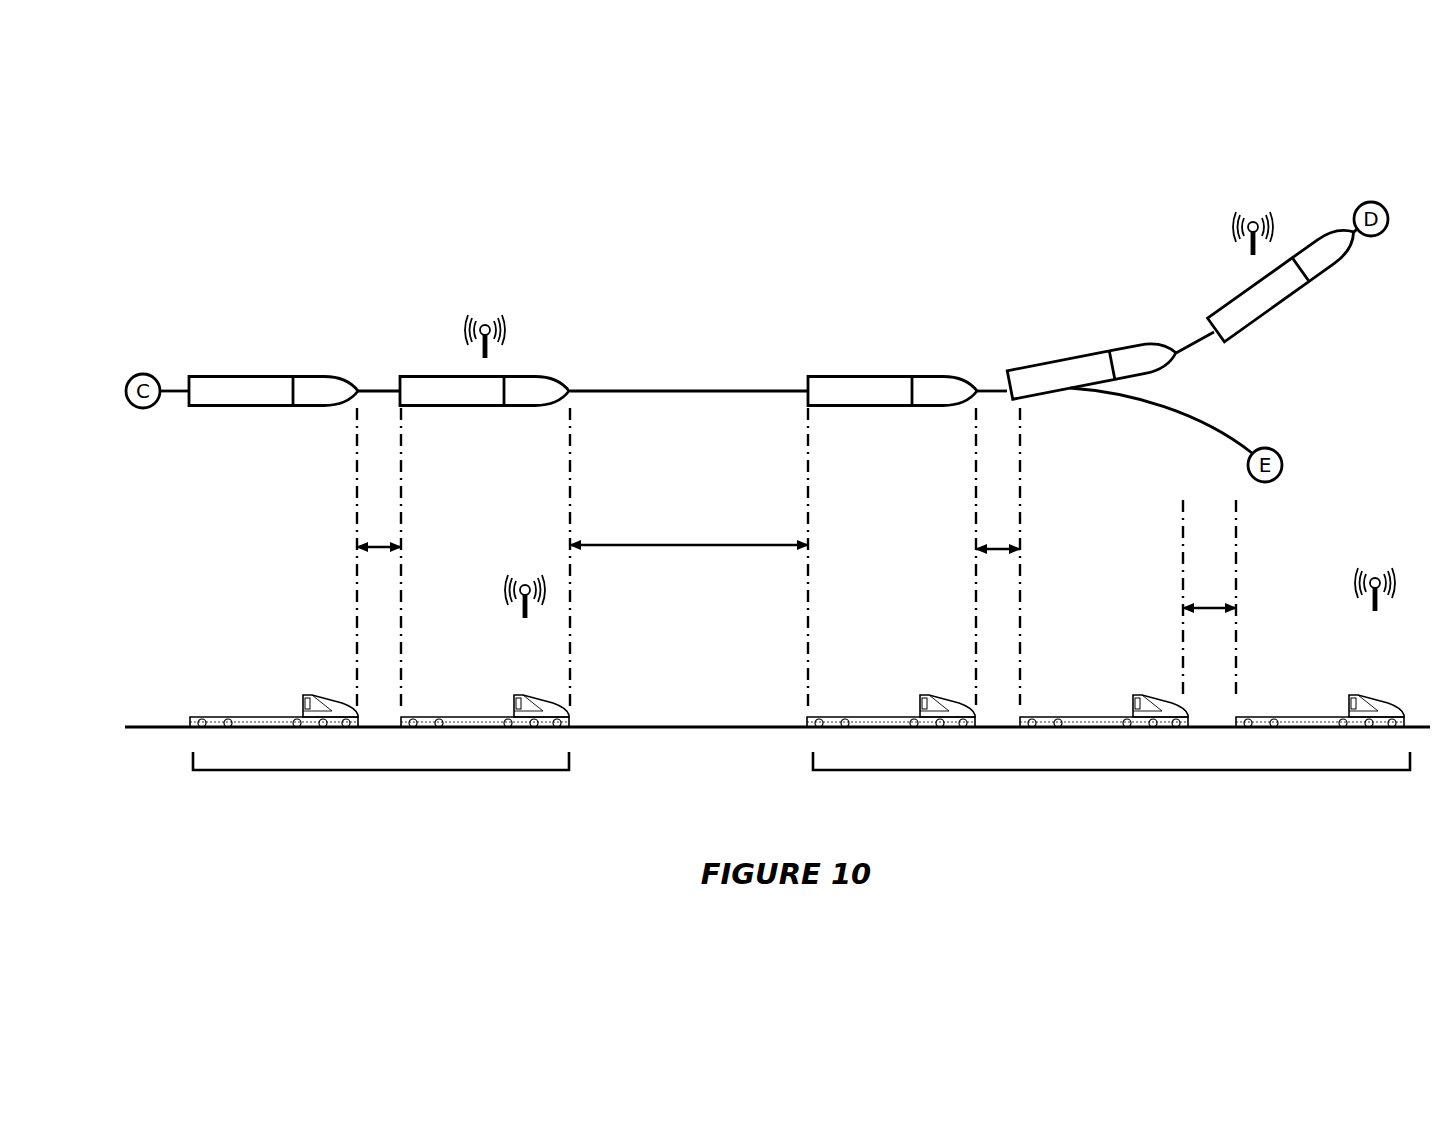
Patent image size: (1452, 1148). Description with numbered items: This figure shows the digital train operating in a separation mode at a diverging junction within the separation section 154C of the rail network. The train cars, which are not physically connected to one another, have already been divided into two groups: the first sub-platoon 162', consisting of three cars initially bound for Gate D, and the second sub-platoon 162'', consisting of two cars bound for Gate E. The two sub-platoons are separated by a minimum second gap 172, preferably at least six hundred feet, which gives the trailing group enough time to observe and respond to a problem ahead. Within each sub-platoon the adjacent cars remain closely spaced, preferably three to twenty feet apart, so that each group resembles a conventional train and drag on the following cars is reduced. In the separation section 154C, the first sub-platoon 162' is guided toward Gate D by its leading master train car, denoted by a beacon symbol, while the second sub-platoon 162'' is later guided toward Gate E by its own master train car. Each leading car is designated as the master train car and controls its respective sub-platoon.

The separation section 154C is at (800, 182).
The second gap 172 is at (686, 543).
The first sub-platoon 162' is at (1111, 797).
The second sub-platoon 162'' is at (381, 797).